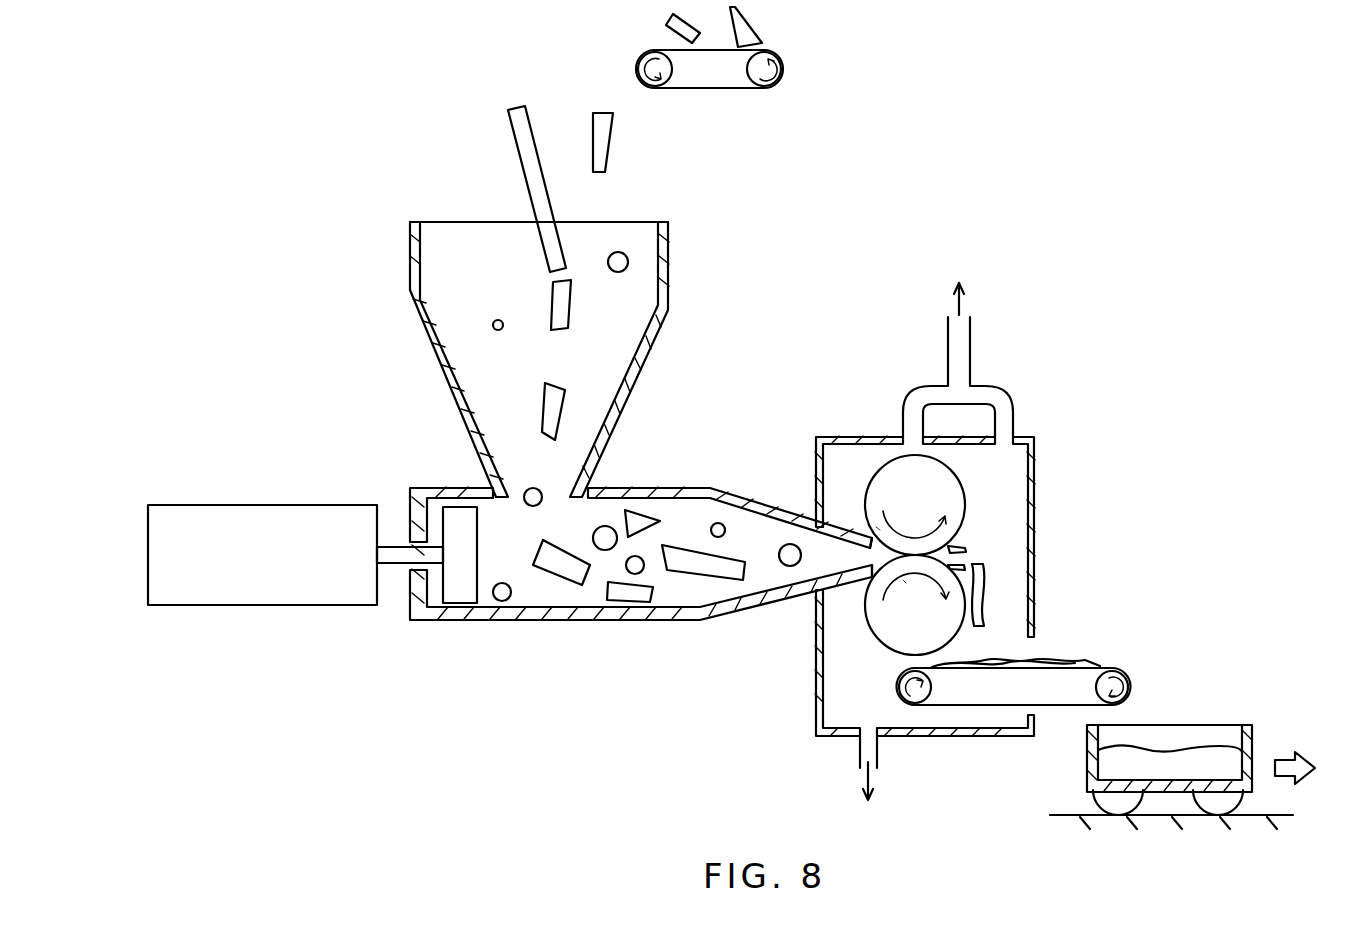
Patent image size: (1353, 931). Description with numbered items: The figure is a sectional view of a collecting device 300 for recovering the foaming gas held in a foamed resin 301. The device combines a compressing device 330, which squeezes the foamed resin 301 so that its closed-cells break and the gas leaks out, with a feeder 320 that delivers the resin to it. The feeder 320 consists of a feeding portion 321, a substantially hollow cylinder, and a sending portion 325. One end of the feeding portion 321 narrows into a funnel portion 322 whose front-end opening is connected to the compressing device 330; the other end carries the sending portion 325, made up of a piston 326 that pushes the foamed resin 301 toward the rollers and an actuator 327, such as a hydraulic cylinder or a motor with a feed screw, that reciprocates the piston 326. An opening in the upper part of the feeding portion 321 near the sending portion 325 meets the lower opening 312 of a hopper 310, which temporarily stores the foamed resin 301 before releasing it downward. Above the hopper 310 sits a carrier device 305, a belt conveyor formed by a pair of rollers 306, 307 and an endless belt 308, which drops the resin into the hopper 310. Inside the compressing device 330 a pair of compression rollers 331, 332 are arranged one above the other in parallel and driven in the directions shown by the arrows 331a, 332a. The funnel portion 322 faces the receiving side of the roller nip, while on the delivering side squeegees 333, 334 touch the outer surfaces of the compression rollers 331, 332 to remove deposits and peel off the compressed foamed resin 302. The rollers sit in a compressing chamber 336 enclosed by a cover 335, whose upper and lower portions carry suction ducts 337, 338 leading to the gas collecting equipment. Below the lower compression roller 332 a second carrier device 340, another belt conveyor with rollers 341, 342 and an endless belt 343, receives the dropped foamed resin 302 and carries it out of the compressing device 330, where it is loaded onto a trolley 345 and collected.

The collecting device 300 is at (968, 169).
The foamed resin 301 is at (605, 48).
The compressed foamed resin 302 is at (1050, 658).
The carrier device 305 is at (705, 132).
The roller 306 is at (660, 90).
The roller 307 is at (775, 109).
The endless belt 308 is at (708, 90).
The hopper 310 is at (640, 366).
The lower opening 312 is at (547, 487).
The feeder 320 is at (641, 546).
The feeding portion 321 is at (653, 622).
The funnel portion 322 is at (782, 598).
The sending portion 325 is at (314, 627).
The piston 326 is at (428, 596).
The actuator 327 is at (285, 610).
The compressing device 330 is at (947, 541).
The compression roller 331 is at (882, 473).
The arrow 331a is at (876, 527).
The compression roller 332 is at (820, 738).
The arrow 332a is at (903, 580).
The squeegee 333 is at (950, 547).
The squeegee 334 is at (978, 592).
The cover 335 is at (1035, 475).
The compressing chamber 336 is at (998, 510).
The suction duct 337 is at (970, 343).
The suction duct 338 is at (860, 752).
The carrier device 340 is at (1009, 759).
The roller 341 is at (917, 705).
The roller 342 is at (1077, 732).
The endless belt 343 is at (1005, 705).
The trolley 345 is at (1250, 725).